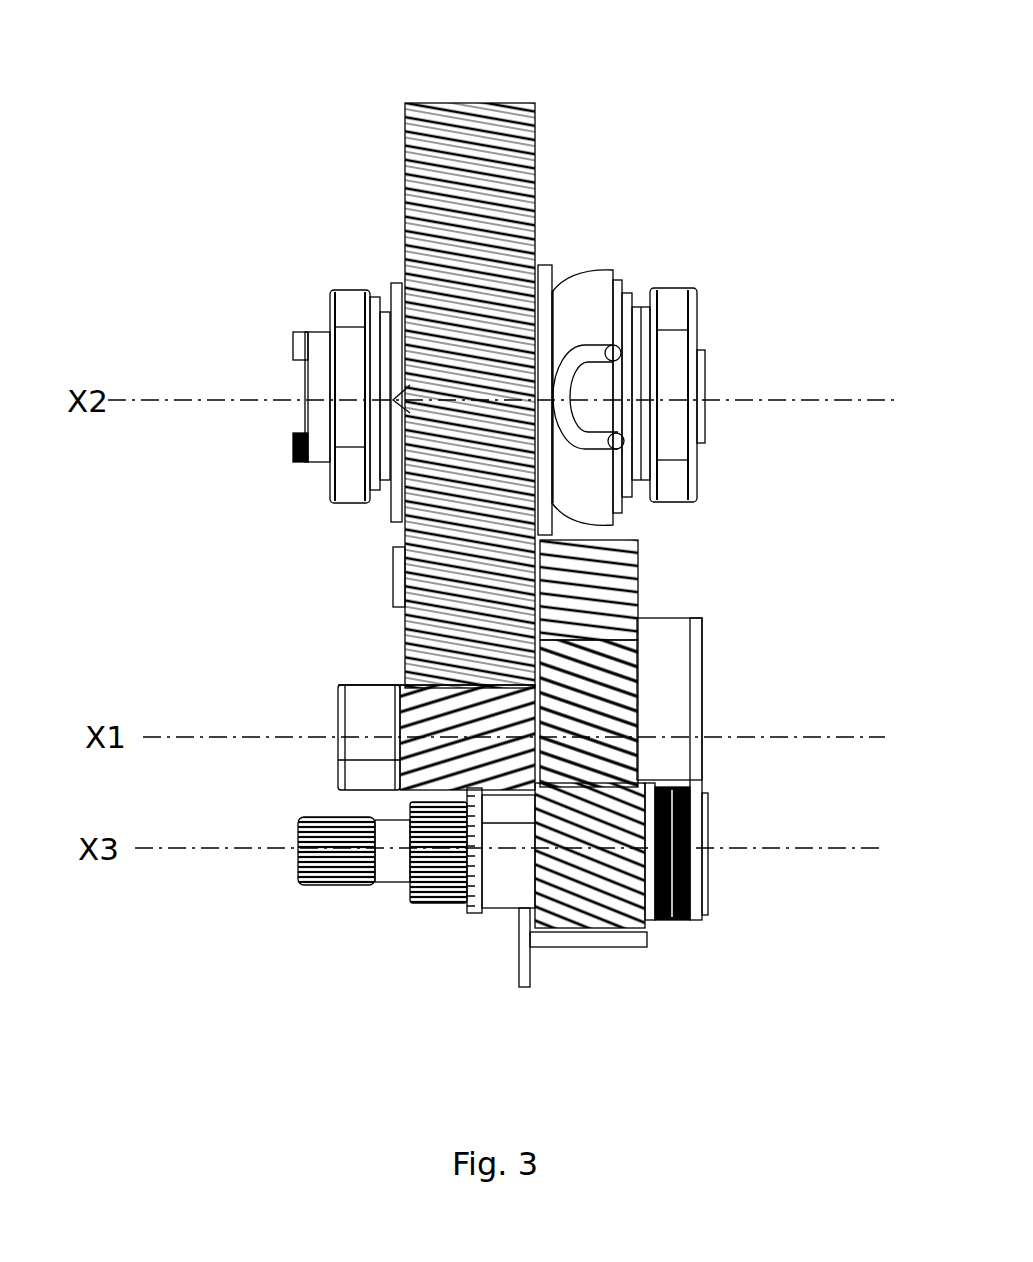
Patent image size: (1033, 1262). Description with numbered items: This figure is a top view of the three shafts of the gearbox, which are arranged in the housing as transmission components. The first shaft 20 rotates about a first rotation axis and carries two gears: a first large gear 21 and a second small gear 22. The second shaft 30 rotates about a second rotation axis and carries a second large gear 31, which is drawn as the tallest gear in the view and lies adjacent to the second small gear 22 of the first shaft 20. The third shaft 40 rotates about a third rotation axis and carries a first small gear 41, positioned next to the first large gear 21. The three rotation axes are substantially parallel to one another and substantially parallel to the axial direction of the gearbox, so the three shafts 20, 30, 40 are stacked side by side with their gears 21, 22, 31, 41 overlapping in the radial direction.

The first shaft 20 is at (358, 733).
The first large gear 21 is at (640, 636).
The second small gear 22 is at (397, 703).
The second shaft 30 is at (588, 335).
The second large gear 31 is at (498, 172).
The third shaft 40 is at (517, 870).
The first small gear 41 is at (647, 930).